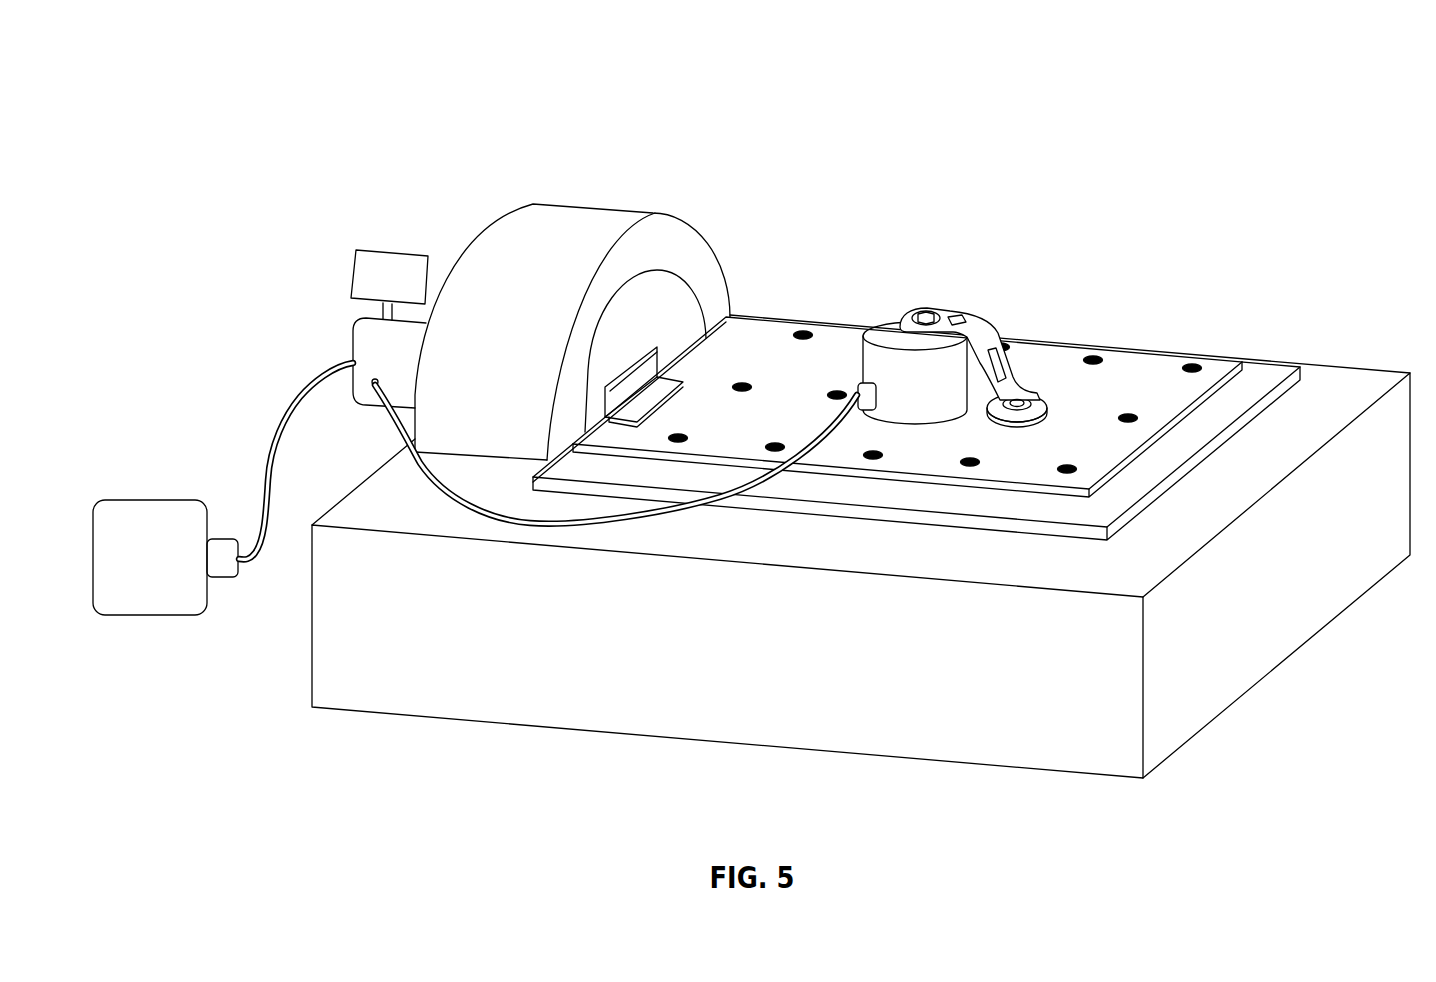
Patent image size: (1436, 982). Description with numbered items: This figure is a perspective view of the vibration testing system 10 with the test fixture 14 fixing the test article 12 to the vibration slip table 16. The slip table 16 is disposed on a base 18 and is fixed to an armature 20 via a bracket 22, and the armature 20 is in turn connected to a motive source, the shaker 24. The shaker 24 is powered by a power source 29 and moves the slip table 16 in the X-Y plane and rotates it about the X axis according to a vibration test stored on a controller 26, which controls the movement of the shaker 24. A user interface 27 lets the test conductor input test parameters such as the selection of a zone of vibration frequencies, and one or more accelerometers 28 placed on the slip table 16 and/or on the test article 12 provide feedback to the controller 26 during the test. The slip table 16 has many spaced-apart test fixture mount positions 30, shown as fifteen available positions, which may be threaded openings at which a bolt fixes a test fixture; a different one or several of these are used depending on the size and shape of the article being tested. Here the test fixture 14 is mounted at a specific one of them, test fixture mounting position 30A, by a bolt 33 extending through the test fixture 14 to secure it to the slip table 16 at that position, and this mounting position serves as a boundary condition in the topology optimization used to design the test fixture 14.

The vibration testing system 10 is at (1025, 140).
The test article 12 is at (903, 396).
The test fixture 14 is at (993, 348).
The vibration slip table 16 is at (1158, 377).
The base 18 is at (1316, 606).
The armature 20 is at (655, 302).
The bracket 22 is at (640, 374).
The shaker 24 is at (573, 222).
The controller 26 is at (372, 337).
The user interface 27 is at (347, 273).
The accelerometers 28 is at (860, 393).
The power source 29 is at (134, 571).
The test fixture mount positions 30 is at (916, 440).
The test fixture mounting position 30A is at (1047, 423).
The bolt 33 is at (924, 310).